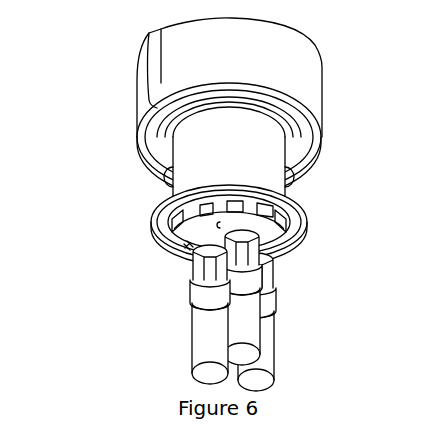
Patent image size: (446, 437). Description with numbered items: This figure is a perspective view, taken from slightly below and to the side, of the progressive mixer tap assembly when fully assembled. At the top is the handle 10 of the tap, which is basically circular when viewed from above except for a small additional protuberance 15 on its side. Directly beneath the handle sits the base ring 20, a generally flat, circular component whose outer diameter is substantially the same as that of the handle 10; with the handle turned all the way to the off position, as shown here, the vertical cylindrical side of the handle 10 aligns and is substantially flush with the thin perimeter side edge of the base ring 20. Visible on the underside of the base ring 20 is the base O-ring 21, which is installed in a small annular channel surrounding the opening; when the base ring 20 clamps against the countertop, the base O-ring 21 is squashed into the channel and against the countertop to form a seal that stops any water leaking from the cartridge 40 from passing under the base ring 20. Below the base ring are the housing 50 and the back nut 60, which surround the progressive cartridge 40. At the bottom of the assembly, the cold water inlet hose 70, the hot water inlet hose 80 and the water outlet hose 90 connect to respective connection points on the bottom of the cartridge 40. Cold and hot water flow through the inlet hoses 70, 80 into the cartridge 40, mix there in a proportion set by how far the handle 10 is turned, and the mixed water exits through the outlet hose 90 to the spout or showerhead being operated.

The handle 10 is at (287, 70).
The protuberance 15 is at (157, 63).
The base ring 20 is at (310, 153).
The base O-ring 21 is at (157, 139).
The progressive cartridge 40 is at (192, 233).
The housing 50 is at (174, 190).
The back nut 60 is at (158, 237).
The cold water inlet hose 70 is at (242, 298).
The hot water inlet hose 80 is at (205, 347).
The water outlet hose 90 is at (263, 348).